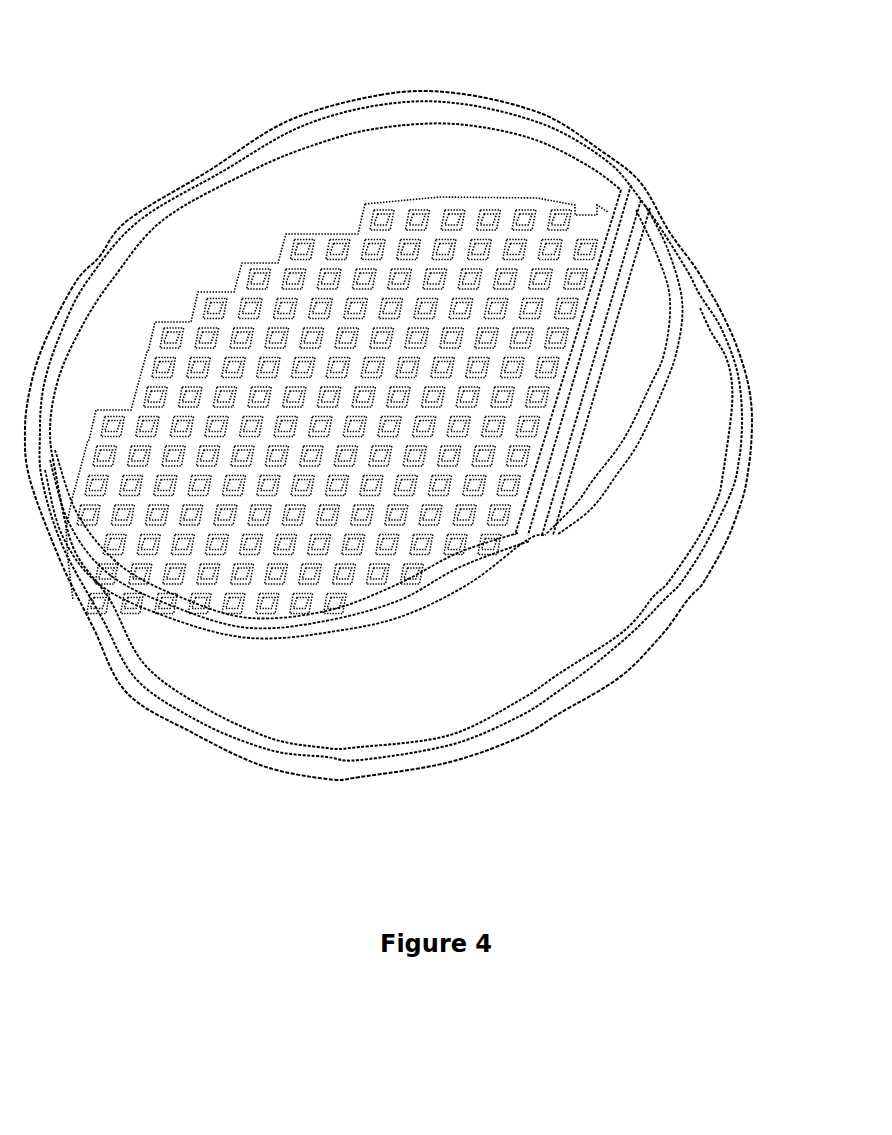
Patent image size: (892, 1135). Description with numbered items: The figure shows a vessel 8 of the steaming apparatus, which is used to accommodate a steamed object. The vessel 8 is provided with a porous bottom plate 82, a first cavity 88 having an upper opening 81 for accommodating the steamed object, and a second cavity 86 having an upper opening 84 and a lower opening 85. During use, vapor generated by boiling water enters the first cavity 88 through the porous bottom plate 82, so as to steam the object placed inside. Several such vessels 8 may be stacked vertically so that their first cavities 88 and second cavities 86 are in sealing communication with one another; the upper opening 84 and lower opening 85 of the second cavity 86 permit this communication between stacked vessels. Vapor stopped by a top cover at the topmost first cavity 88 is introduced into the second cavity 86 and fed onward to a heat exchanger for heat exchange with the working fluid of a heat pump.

The vessel 8 is at (620, 105).
The upper opening 81 is at (360, 147).
The porous bottom plate 82 is at (267, 577).
The upper opening 84 is at (640, 282).
The lower opening 85 is at (711, 595).
The second cavity 86 is at (643, 347).
The first cavity 88 is at (250, 200).